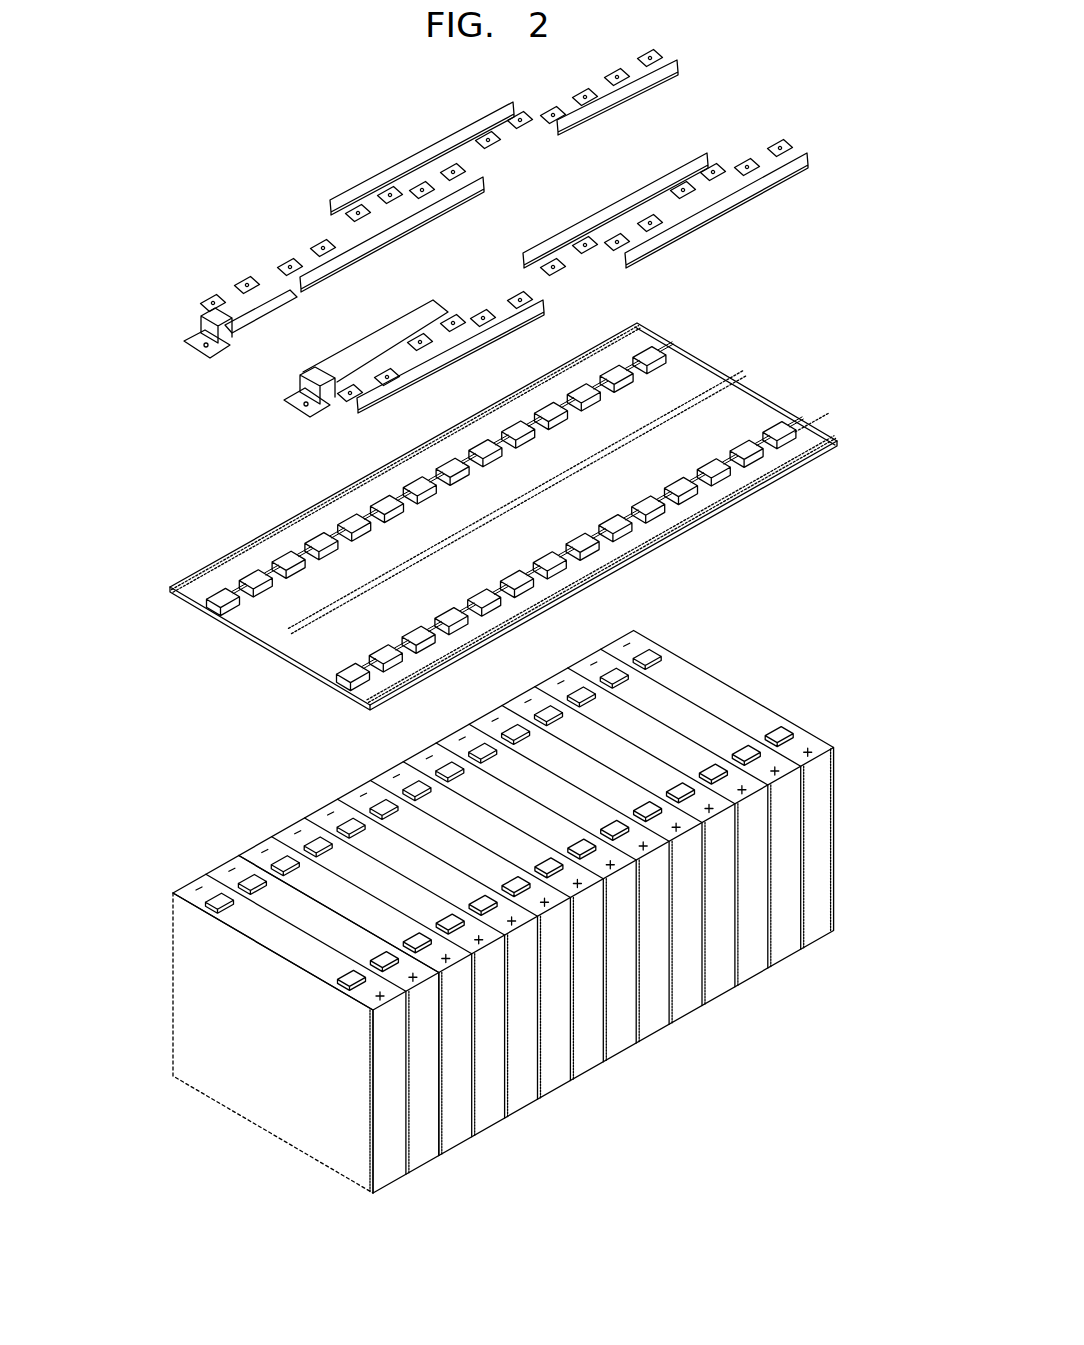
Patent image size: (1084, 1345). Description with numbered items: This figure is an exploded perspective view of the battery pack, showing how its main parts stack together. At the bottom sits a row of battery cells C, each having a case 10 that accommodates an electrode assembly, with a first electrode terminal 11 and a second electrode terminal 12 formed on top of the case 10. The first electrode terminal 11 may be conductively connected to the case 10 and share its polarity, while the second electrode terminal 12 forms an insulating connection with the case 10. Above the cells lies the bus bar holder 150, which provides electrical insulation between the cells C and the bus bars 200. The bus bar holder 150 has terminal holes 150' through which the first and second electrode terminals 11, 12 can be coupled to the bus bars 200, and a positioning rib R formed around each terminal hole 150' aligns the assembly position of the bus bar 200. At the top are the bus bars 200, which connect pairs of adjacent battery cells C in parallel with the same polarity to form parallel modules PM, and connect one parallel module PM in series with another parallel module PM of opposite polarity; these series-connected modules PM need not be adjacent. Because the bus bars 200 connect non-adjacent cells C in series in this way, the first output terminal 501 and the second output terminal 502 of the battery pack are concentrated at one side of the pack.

The bus bar 200 is at (413, 152).
The first output terminal 501 is at (303, 402).
The second output terminal 502 is at (198, 346).
The bus bar holder 150 is at (503, 510).
The terminal hole 150' is at (803, 392).
The positioning rib R is at (803, 422).
The case 10 is at (530, 1098).
The first electrode terminal 11 is at (345, 983).
The second electrode terminal 12 is at (216, 906).
The battery cell C is at (393, 1180).
The parallel module PM is at (492, 1237).